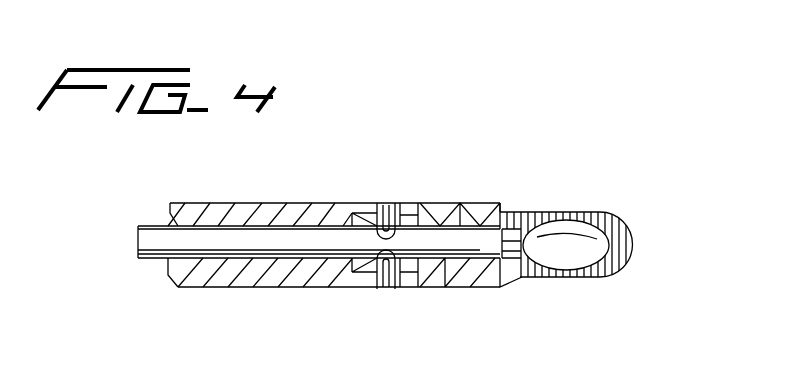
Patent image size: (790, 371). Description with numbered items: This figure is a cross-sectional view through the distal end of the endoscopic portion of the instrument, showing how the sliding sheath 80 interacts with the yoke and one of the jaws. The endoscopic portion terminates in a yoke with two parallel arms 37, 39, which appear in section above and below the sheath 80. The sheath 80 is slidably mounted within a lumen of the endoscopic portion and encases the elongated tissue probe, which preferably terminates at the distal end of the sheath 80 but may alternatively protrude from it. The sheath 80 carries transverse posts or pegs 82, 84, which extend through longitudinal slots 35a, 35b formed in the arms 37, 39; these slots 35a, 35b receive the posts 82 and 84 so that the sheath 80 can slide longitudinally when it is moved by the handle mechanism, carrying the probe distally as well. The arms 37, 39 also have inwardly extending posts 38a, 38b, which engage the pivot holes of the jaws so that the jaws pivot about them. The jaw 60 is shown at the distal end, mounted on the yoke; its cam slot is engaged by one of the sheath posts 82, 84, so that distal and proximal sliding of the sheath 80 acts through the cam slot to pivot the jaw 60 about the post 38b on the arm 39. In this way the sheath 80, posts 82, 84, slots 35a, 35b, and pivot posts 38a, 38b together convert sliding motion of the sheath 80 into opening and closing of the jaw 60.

The arm 37 is at (250, 203).
The arm 39 is at (277, 287).
The post 82 is at (381, 203).
The post 84 is at (384, 289).
The longitudinal slot 35a is at (407, 215).
The longitudinal slot 35b is at (410, 285).
The post 38a is at (456, 222).
The post 38b is at (457, 290).
The sheath 80 is at (472, 240).
The jaw 60 is at (560, 278).